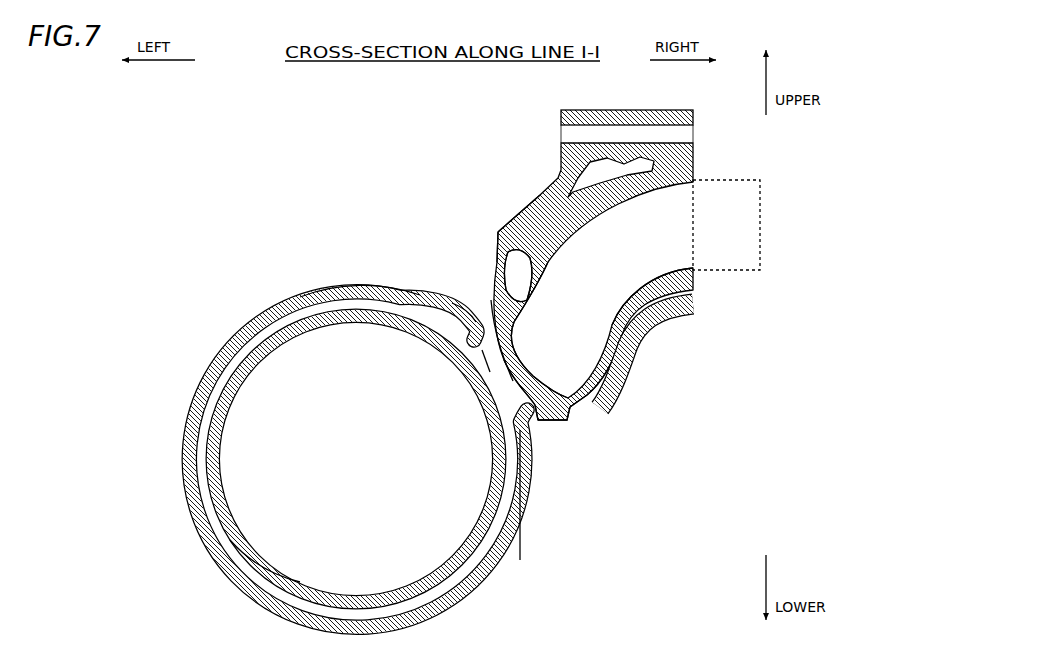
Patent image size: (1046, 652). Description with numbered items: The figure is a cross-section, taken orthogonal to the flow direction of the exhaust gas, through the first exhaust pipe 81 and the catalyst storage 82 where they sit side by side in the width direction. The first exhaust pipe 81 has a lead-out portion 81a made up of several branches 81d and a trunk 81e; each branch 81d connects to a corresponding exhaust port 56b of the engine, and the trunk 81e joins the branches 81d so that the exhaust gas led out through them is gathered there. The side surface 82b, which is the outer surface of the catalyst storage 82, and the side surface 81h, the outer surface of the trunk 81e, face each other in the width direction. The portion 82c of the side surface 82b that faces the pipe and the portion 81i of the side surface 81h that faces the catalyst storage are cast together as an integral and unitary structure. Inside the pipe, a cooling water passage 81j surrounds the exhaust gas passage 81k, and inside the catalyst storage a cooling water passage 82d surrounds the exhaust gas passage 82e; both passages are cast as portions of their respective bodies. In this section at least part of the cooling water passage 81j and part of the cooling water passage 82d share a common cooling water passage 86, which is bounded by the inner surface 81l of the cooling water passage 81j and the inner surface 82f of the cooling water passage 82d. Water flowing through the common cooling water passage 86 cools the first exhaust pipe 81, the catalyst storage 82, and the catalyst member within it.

The first exhaust pipe 81 is at (486, 208).
The lead-out portion 81a is at (510, 202).
The branch 81d is at (678, 322).
The trunk 81e is at (601, 412).
The side surface of the trunk 81h is at (478, 292).
The portion of the side surface of the trunk 81i is at (465, 306).
The cooling water passage 81j is at (493, 280).
The exhaust gas passage 81k is at (564, 424).
The inner surface of the cooling water passage 81l is at (491, 352).
The catalyst storage 82 is at (198, 331).
The side surface of the catalyst storage 82b is at (340, 279).
The portion of the side surface of the catalyst storage 82c is at (462, 307).
The cooling water passage 82d is at (218, 534).
The exhaust gas passage 82e is at (255, 488).
The inner surface of the cooling water passage 82f is at (498, 386).
The common cooling water passage 86 is at (496, 382).
The exhaust port 56b is at (728, 272).